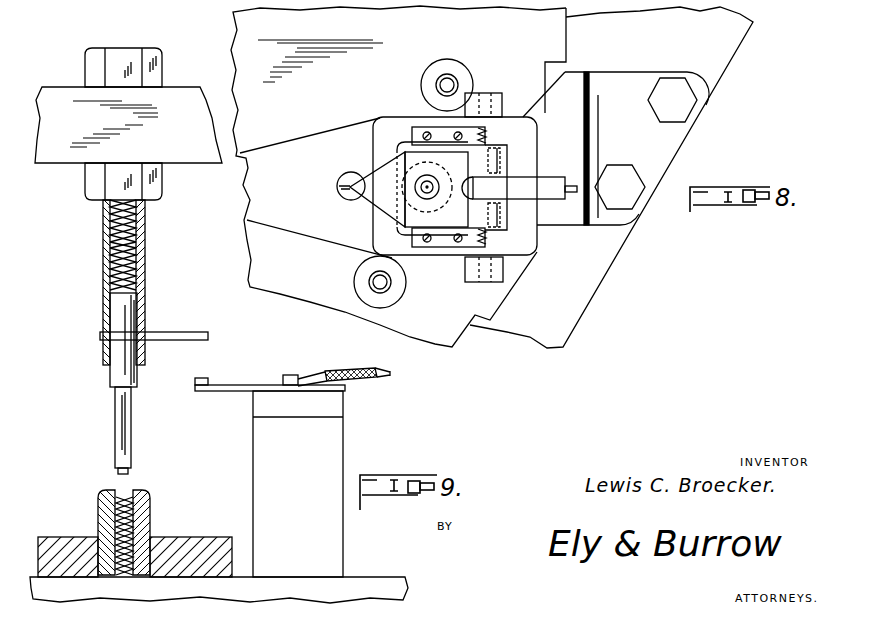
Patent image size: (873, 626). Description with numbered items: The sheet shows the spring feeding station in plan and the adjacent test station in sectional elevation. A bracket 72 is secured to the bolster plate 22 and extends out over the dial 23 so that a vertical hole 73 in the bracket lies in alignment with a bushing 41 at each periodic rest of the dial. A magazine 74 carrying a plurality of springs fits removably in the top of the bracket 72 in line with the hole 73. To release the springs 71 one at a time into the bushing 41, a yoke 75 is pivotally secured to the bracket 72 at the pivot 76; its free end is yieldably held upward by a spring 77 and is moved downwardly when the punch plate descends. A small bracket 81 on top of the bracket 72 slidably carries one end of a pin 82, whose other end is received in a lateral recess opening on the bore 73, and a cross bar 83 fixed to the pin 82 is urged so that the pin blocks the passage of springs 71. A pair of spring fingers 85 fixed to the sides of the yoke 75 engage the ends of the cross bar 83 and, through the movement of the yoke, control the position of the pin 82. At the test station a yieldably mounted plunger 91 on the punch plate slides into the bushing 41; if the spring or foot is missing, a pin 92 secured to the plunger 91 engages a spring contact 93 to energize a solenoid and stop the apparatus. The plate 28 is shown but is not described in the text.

In FIG. 8, the bolster plate 22 is at (587, 313).
In FIG. 9, the dial 23 is at (187, 540).
In FIG. 8, the dial 23 is at (322, 295).
In FIG. 9, the arm plate 28 is at (185, 85).
In FIG. 9, the bushing 41 is at (150, 528).
In FIG. 8, the bushing 41 is at (462, 62).
In FIG. 9, the spring 71 is at (134, 518).
In FIG. 8, the bracket 72 is at (577, 83).
In FIG. 8, the vertical hole 73 is at (421, 183).
In FIG. 8, the magazine 74 is at (426, 178).
In FIG. 8, the yoke 75 is at (382, 237).
In FIG. 8, the pivot 76 is at (502, 92).
In FIG. 8, the spring 77 is at (348, 193).
In FIG. 8, the small bracket 81 is at (547, 175).
In FIG. 8, the pin 82 is at (574, 194).
In FIG. 8, the cross bar 83 is at (490, 232).
In FIG. 8, the spring fingers 85 is at (470, 128).
In FIG. 9, the plunger 91 is at (133, 425).
In FIG. 9, the pin 92 is at (190, 331).
In FIG. 9, the spring contact 93 is at (230, 385).